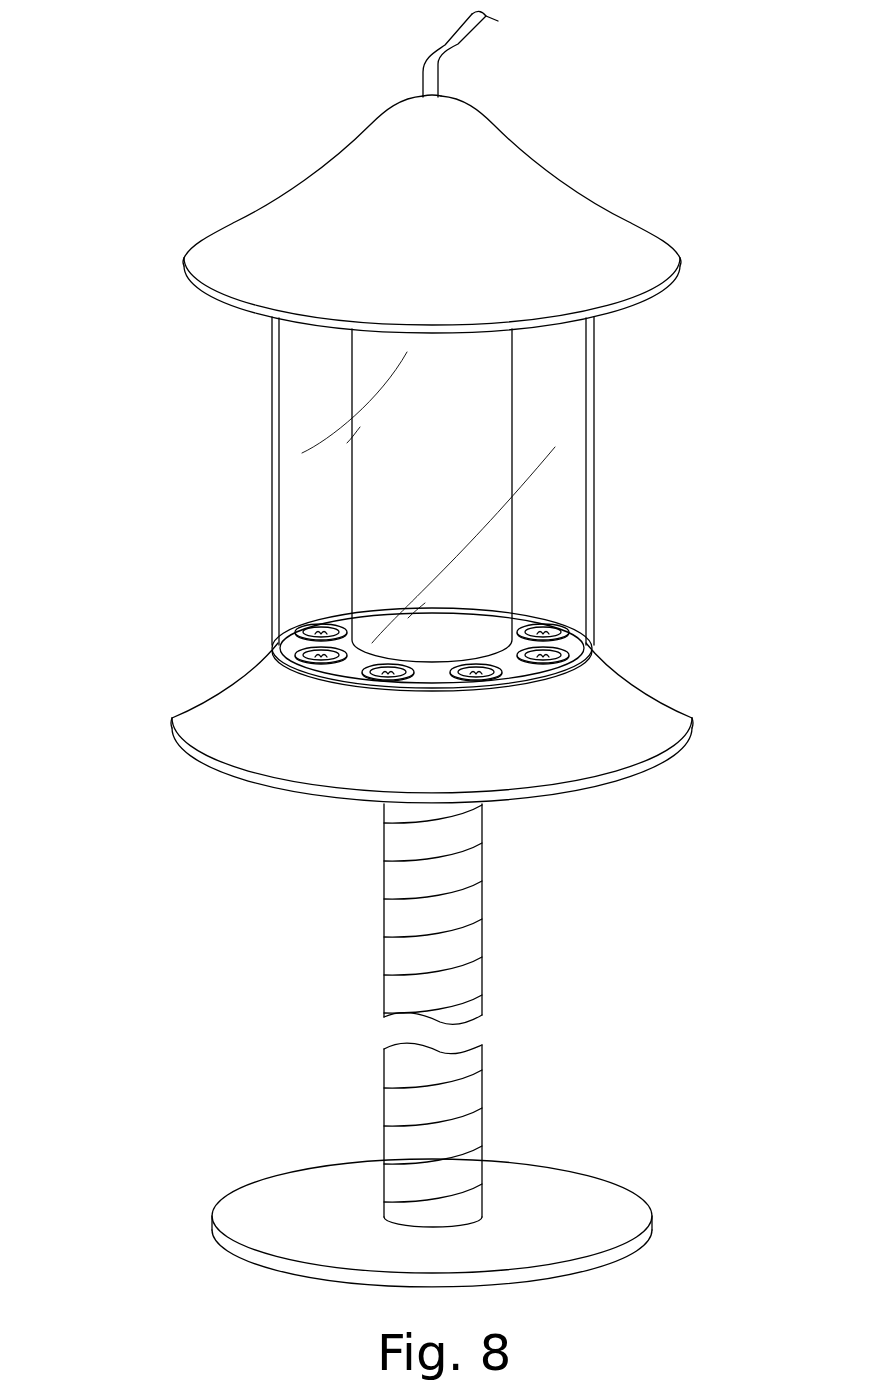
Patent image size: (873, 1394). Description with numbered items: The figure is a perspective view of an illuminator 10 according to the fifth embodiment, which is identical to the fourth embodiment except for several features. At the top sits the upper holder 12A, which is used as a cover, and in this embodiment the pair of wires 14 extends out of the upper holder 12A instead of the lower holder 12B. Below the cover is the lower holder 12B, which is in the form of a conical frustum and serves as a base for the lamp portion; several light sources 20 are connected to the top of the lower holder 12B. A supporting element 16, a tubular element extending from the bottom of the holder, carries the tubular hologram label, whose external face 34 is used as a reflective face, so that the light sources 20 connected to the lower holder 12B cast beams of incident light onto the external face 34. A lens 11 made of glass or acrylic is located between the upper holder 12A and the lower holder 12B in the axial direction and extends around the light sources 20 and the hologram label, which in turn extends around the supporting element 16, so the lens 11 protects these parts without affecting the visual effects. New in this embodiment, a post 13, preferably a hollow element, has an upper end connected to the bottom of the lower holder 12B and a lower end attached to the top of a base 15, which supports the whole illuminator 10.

The illuminator 10 is at (221, 182).
The lens 11 is at (292, 368).
The upper holder 12A is at (585, 222).
The lower holder 12B is at (219, 693).
The post 13 is at (467, 947).
The pair of wires 14 is at (450, 47).
The base 15 is at (608, 1205).
The supporting element 16 is at (541, 398).
The light sources 20 is at (304, 611).
The external face 34 is at (366, 496).